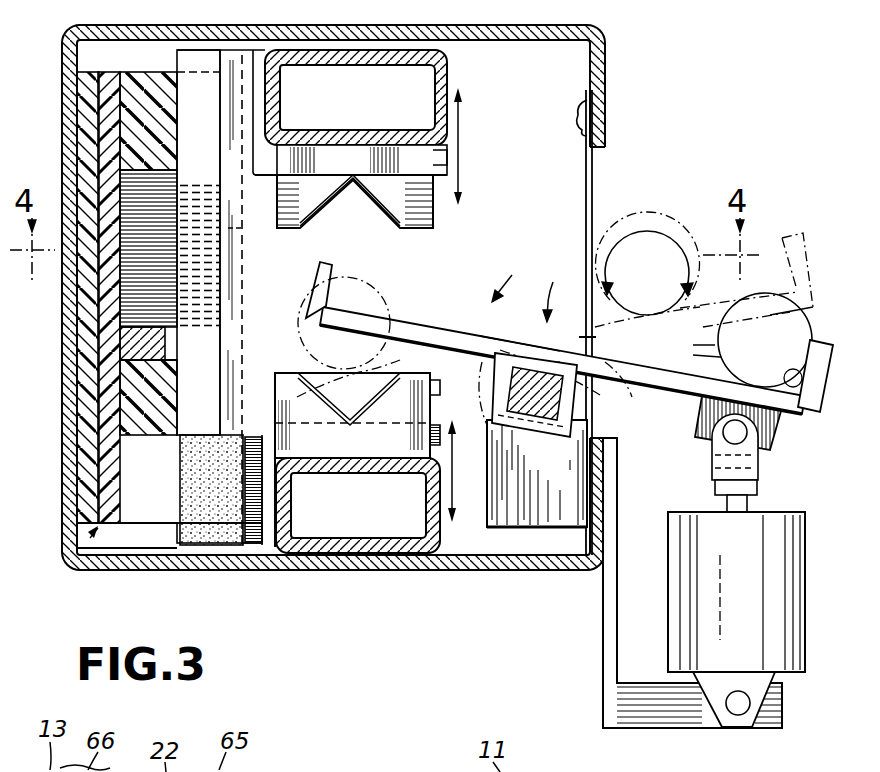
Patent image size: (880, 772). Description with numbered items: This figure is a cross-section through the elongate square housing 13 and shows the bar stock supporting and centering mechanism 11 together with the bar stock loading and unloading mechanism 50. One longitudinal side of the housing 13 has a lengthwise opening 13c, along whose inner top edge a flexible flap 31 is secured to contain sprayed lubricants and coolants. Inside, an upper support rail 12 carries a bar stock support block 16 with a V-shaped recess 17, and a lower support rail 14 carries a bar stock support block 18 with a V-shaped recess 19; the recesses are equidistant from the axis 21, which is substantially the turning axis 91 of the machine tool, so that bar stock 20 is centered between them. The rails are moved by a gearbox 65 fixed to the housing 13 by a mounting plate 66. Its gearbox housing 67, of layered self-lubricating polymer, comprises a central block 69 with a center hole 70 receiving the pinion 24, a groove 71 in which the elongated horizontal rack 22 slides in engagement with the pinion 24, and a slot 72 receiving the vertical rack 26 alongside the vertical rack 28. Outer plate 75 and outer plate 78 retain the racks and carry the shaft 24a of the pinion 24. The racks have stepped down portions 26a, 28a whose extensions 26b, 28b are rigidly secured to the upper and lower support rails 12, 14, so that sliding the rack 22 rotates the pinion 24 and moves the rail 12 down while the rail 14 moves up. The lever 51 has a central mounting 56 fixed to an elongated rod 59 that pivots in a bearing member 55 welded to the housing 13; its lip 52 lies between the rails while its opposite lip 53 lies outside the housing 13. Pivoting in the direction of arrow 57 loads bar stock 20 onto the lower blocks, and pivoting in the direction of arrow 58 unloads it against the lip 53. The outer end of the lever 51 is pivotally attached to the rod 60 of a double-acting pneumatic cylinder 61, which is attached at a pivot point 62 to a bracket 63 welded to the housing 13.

The bar stock supporting and centering mechanism 11 is at (500, 102).
The upper support rail 12 is at (446, 62).
The housing 13 is at (552, 27).
The lengthwise opening 13c is at (604, 147).
The lower support rail 14 is at (435, 572).
The bar stock support block 16 is at (435, 214).
The V-shaped recess 17 is at (395, 192).
The bar stock support block 18 is at (387, 440).
The V-shaped recess 19 is at (352, 440).
The bar stock 20 is at (390, 308).
The axis 21 is at (348, 303).
The turning axis 91 is at (348, 378).
The elongated horizontal rack 22 is at (125, 350).
The pinion 24 is at (165, 215).
The shaft 24a is at (245, 262).
The vertical rack 26 is at (198, 55).
The stepped down portion 26a is at (245, 60).
The extension 26b is at (435, 160).
The vertical rack 28 is at (197, 572).
The stepped down portion 28a is at (250, 572).
The extension 28b is at (432, 392).
The flexible flap 31 is at (595, 219).
The bar stock loading and unloading mechanism 50 is at (555, 290).
The lever 51 is at (503, 344).
The lip 52 is at (340, 282).
The lip 53 is at (822, 395).
The bearing member 55 is at (560, 504).
The central mounting 56 is at (540, 434).
The arrow 57 is at (507, 276).
The arrow 58 is at (620, 350).
The elongated rod 59 is at (520, 350).
The rod 60 is at (755, 490).
The double-acting pneumatic cylinder 61 is at (748, 607).
The pivot point 62 is at (730, 730).
The bracket 63 is at (618, 700).
The gearbox 65 is at (73, 575).
The mounting plate 66 is at (85, 445).
The gearbox housing 67 is at (120, 548).
The central block 69 is at (135, 112).
The center hole 70 is at (145, 170).
The groove 71 is at (125, 393).
The slot 72 is at (202, 435).
The outer plate 75 is at (232, 572).
The outer plate 78 is at (130, 342).